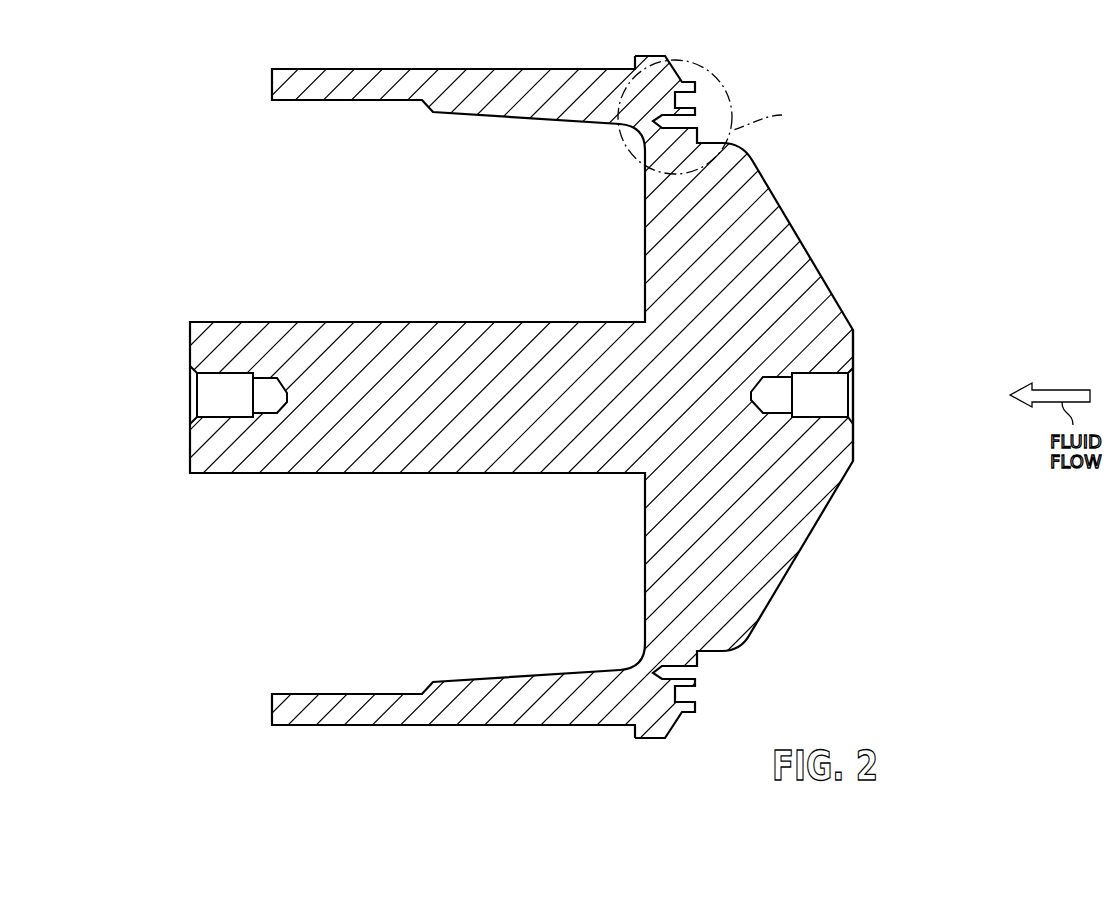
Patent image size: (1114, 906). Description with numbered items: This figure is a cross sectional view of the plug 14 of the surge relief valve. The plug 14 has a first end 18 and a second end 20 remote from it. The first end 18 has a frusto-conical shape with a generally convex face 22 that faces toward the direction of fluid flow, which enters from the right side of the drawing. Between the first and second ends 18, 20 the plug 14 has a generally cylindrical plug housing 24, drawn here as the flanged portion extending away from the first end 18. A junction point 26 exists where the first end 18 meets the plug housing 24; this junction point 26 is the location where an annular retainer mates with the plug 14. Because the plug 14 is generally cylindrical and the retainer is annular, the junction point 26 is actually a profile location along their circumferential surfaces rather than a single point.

The plug 14 is at (873, 277).
The first end 18 is at (891, 405).
The second end 20 is at (172, 397).
The convex face 22 is at (853, 377).
The plug housing 24 is at (474, 69).
The junction point 26 is at (748, 92).